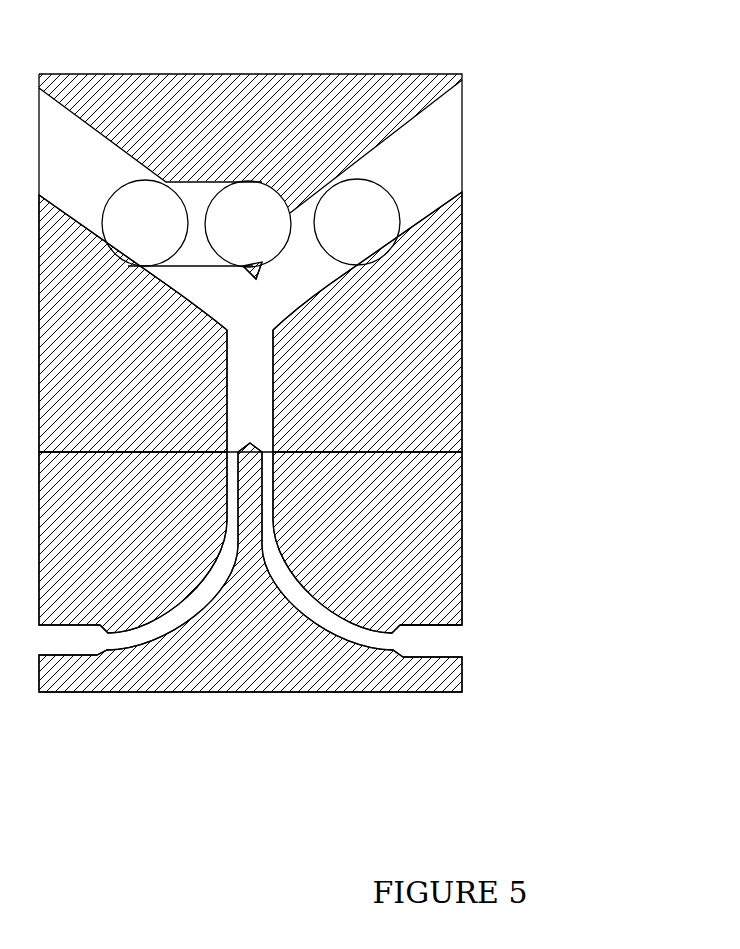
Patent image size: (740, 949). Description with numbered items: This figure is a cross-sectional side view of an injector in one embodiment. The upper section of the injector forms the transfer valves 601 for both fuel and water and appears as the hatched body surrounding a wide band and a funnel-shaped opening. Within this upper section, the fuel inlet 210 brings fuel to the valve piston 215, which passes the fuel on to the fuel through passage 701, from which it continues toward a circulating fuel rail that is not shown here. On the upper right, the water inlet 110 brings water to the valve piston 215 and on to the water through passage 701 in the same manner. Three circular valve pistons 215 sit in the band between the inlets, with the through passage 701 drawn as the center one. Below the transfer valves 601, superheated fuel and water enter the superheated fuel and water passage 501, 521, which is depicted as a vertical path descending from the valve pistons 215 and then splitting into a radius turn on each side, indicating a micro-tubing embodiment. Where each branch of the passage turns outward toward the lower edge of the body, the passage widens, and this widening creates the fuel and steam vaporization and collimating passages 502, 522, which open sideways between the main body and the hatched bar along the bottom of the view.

The fuel inlet 210 is at (69, 163).
The valve piston 215 is at (152, 222).
The fuel through passage 701 is at (250, 215).
The water inlet 110 is at (430, 165).
The transfer valves 601 is at (413, 342).
The superheated fuel and water passage 501 is at (329, 493).
The superheated fuel and water passage 521 is at (228, 592).
The fuel and steam vaporization and collimating passage 502 is at (333, 620).
The fuel and steam vaporization and collimating passage 522 is at (454, 636).